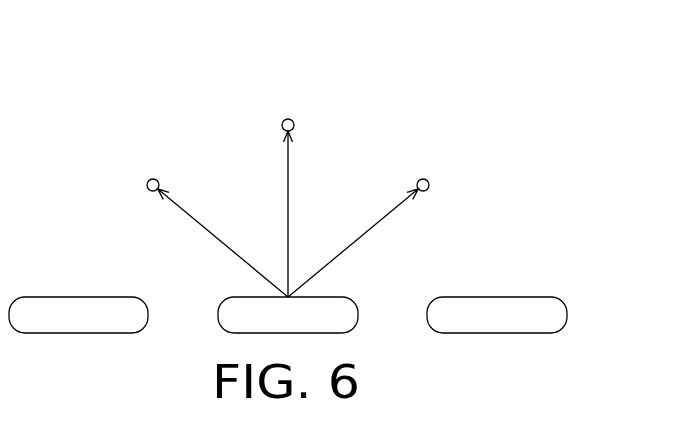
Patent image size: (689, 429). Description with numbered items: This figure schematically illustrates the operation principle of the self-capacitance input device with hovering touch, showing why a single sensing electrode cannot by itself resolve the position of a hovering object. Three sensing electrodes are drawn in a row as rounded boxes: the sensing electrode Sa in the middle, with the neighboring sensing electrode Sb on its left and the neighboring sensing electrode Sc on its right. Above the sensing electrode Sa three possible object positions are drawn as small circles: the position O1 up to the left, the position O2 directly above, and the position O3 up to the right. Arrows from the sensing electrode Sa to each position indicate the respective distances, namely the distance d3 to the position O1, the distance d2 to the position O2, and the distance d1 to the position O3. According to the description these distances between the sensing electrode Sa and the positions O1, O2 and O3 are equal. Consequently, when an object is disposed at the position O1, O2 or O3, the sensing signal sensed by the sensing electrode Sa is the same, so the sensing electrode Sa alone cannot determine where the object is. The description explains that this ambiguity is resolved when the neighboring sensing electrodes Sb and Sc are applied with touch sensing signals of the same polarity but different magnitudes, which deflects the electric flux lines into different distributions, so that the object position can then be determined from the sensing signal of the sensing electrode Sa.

The position O1 is at (146, 167).
The position O2 is at (290, 104).
The position O3 is at (437, 168).
The distance d1 is at (353, 243).
The distance d2 is at (302, 214).
The distance d3 is at (223, 243).
The sensing electrode Sa is at (288, 314).
The sensing electrode Sb is at (78, 314).
The sensing electrode Sc is at (497, 314).